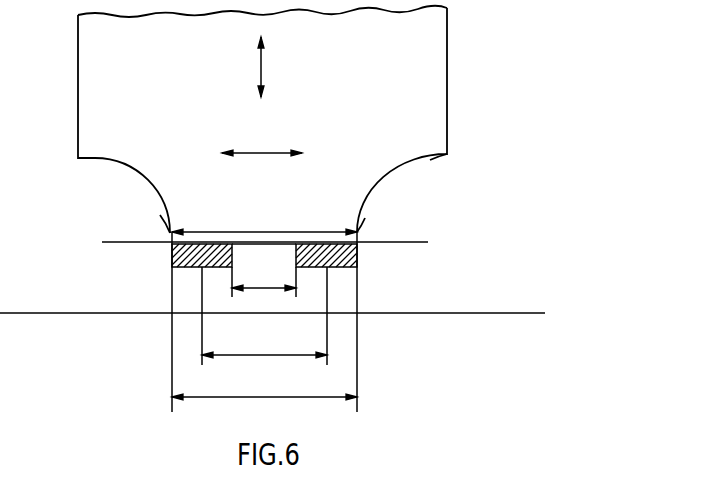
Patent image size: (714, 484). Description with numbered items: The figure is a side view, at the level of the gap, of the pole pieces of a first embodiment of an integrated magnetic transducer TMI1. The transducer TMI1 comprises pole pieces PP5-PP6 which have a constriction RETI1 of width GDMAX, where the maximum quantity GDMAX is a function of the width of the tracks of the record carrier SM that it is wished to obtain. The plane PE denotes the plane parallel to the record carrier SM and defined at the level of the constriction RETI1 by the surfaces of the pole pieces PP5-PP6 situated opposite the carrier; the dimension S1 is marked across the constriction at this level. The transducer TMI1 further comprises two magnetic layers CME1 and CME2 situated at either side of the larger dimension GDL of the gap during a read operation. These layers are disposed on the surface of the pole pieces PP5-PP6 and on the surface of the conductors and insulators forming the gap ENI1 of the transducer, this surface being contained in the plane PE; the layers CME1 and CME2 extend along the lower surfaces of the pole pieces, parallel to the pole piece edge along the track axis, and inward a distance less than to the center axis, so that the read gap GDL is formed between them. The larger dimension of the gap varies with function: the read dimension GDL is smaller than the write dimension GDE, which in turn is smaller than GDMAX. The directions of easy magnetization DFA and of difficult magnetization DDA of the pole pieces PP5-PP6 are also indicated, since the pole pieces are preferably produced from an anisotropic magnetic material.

The pole pieces PP5-PP6 is at (447, 46).
The direction of difficult magnetization DDA is at (285, 67).
The direction of easy magnetization DFA is at (262, 142).
The transducer TMI1 is at (447, 154).
The constriction RETI1 is at (380, 205).
The gap ENI1 is at (279, 241).
The width S1 of recess S1 is at (264, 220).
The plane PE is at (280, 239).
The magnetic layer CME1 is at (199, 267).
The magnetic layer CME2 is at (317, 267).
The record carrier SM is at (523, 312).
The larger dimension of the gap during read operation GDL is at (264, 280).
The larger dimension of the gap during write operation GDE is at (264, 316).
The maximum gap dimension GDMAX is at (264, 322).